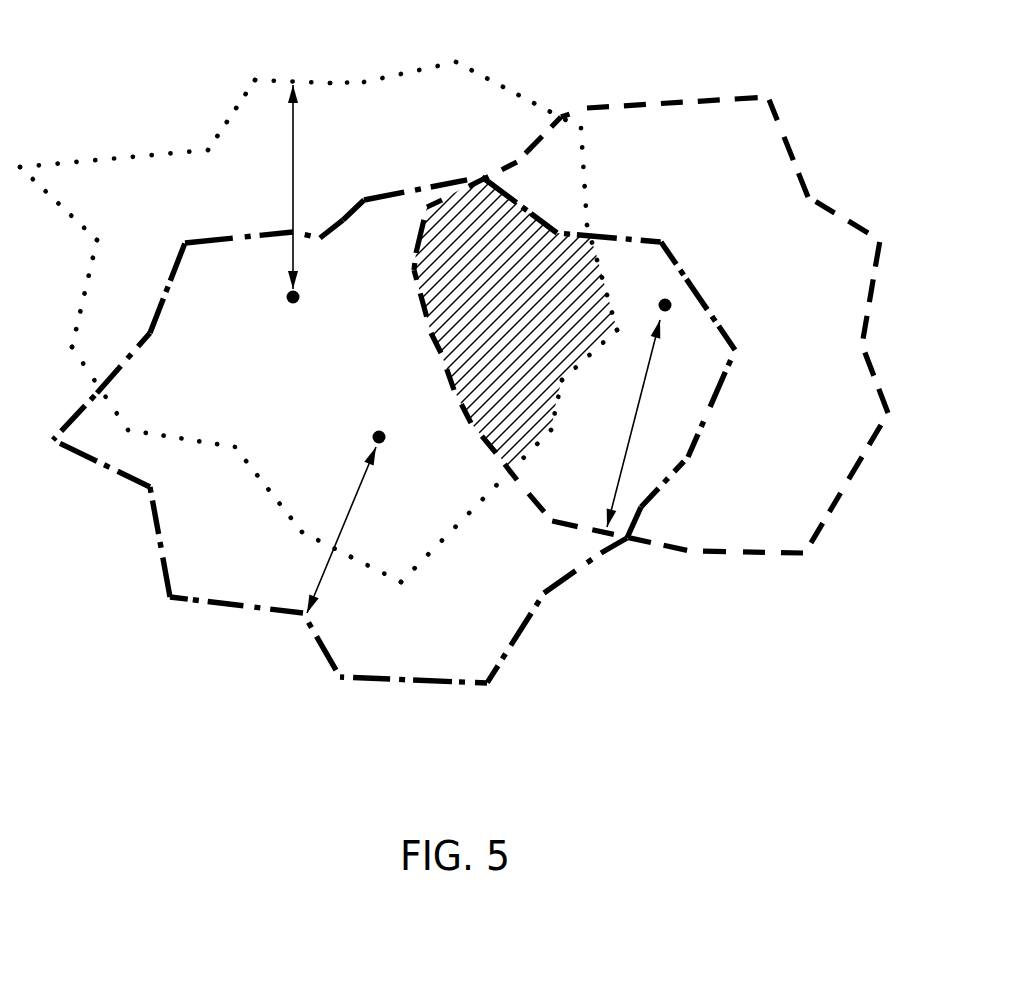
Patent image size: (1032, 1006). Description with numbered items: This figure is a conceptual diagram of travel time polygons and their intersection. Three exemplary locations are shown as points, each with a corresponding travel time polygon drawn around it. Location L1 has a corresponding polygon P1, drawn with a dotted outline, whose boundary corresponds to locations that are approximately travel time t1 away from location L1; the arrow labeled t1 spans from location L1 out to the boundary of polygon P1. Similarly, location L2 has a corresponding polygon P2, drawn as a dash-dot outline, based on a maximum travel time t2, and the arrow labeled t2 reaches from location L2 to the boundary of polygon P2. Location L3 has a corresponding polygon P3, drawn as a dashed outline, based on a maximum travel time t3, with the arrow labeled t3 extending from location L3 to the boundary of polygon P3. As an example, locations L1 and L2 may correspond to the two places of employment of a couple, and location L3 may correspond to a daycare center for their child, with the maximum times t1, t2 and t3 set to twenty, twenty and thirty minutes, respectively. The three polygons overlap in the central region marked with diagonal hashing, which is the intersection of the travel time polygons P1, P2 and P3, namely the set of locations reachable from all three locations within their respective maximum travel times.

The travel time polygon P1 is at (421, 69).
The travel time polygon P2 is at (388, 686).
The travel time polygon P3 is at (872, 357).
The location L1 is at (300, 317).
The location L2 is at (394, 421).
The location L3 is at (679, 323).
The travel time t1 is at (305, 187).
The maximum travel time t2 is at (345, 530).
The maximum travel time t3 is at (636, 423).